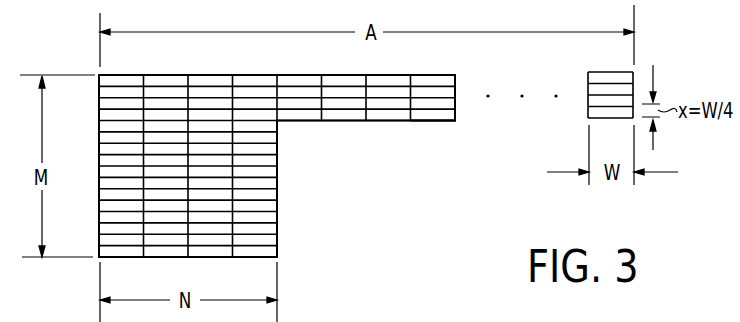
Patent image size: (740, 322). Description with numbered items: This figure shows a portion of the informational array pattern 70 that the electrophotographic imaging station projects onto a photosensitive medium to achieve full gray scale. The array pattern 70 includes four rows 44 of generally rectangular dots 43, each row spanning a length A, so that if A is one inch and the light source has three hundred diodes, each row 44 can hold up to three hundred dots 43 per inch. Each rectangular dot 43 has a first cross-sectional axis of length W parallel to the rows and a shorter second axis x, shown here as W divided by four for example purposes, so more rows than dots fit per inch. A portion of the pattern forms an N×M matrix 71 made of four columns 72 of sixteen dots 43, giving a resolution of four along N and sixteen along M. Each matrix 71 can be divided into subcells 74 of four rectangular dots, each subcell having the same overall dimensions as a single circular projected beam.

The generally rectangular dot 43 is at (253, 80).
The row 44 is at (90, 81).
The informational array pattern 70 is at (465, 60).
The N×M matrix 71 is at (279, 216).
The column 72 is at (206, 68).
The subcell 74 is at (173, 272).